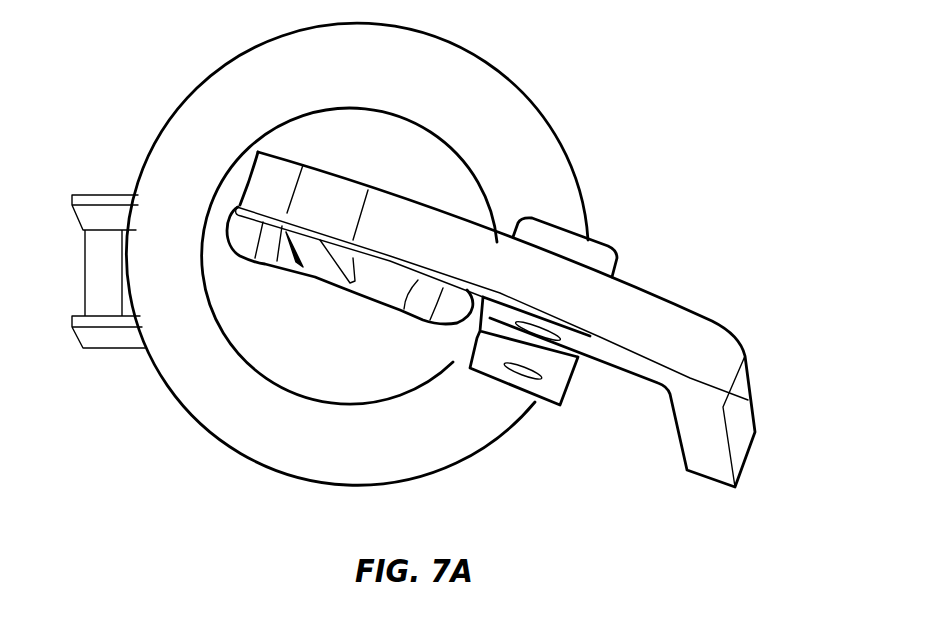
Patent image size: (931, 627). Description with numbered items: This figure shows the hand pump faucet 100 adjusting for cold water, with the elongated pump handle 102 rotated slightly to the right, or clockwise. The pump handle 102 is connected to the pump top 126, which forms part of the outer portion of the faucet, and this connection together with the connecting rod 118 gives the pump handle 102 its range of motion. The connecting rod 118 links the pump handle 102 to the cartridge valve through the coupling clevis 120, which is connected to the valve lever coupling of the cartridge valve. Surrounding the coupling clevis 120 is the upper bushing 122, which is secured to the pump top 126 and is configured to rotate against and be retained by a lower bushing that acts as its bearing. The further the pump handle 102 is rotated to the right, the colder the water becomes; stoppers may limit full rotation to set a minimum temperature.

The hand pump faucet 100 is at (167, 69).
The pump handle 102 is at (751, 393).
The connecting rod 118 is at (320, 262).
The coupling clevis 120 is at (380, 287).
The upper bushing 122 is at (453, 312).
The pump top 126 is at (181, 377).